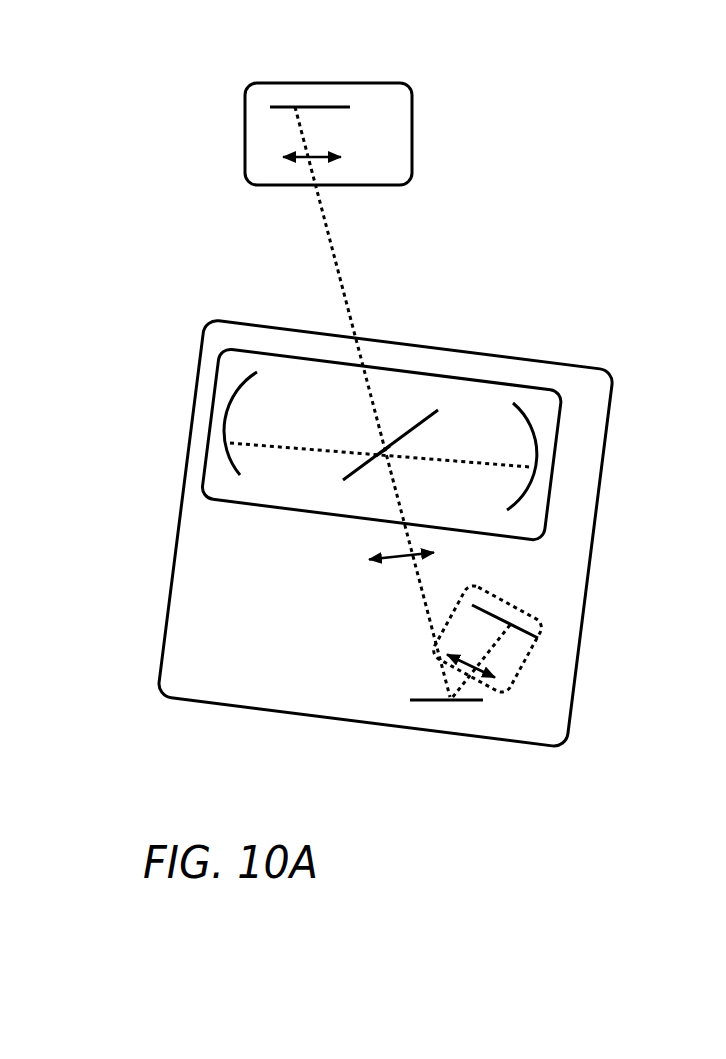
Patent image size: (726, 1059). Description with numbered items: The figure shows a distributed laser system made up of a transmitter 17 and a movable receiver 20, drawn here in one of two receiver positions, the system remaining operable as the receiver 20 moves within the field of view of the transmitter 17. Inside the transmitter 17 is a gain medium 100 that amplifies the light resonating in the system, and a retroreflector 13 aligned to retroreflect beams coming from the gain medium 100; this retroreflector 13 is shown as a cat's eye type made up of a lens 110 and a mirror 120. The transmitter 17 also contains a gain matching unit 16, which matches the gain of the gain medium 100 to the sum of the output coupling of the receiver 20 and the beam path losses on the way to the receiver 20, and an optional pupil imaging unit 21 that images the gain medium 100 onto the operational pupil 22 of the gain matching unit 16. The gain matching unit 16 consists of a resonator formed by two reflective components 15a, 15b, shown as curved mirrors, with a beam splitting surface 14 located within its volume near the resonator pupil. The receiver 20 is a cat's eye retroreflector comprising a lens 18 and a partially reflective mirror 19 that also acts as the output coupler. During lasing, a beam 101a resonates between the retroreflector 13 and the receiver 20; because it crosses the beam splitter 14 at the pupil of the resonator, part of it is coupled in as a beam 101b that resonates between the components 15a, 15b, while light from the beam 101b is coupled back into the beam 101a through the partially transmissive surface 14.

The receiver 20 is at (245, 128).
The partial reflective mirror 19 is at (350, 107).
The lens 18 is at (347, 157).
The beam 101a is at (322, 252).
The transmitter 17 is at (595, 548).
The gain matching unit 16 is at (548, 495).
The reflective component 15a is at (240, 477).
The reflective component 15b is at (518, 407).
The beam 101b is at (293, 445).
The beam splitting surface 14 is at (343, 482).
The operational pupil 22 is at (383, 450).
The pupil imaging unit 21 is at (385, 560).
The retroreflector 13 is at (545, 618).
The mirror 120 is at (540, 638).
The lens 110 is at (500, 680).
The gain medium 100 is at (470, 703).